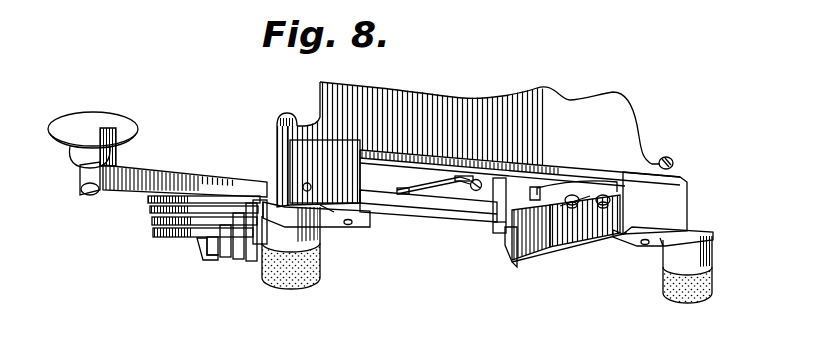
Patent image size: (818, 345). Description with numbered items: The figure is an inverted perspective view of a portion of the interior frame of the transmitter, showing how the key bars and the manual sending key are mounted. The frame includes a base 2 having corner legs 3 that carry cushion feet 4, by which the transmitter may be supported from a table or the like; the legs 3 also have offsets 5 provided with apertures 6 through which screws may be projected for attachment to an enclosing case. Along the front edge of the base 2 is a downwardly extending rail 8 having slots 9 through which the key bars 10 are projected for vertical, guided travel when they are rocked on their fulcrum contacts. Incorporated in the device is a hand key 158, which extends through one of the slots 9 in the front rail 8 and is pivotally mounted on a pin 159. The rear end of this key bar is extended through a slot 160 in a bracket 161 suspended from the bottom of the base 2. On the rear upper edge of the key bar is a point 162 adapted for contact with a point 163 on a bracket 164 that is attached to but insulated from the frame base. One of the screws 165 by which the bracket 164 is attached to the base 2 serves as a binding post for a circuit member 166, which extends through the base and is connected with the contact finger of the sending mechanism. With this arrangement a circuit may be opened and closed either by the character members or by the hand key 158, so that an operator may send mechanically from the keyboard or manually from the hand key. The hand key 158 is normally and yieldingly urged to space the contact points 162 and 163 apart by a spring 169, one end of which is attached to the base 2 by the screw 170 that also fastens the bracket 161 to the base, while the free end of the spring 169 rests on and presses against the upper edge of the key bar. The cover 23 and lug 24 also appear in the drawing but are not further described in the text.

The base 2 is at (672, 182).
The corner legs 3 is at (356, 216).
The cushion feet 4 is at (302, 277).
The offsets 5 is at (334, 213).
The apertures 6 is at (348, 226).
The rail 8 is at (265, 262).
The slots 9 is at (248, 246).
The key bars 10 is at (170, 198).
The cover 23 is at (507, 107).
The lug 24 is at (282, 114).
The hand key 158 is at (152, 177).
The pin 159 is at (288, 170).
The slot 160 is at (497, 180).
The bracket 161 is at (515, 258).
The point 162 is at (532, 198).
The point 163 is at (572, 170).
The bracket 164 is at (587, 198).
The screws 165 is at (582, 208).
The circuit member 166 is at (593, 207).
The spring 169 is at (427, 173).
The screw 170 is at (475, 182).